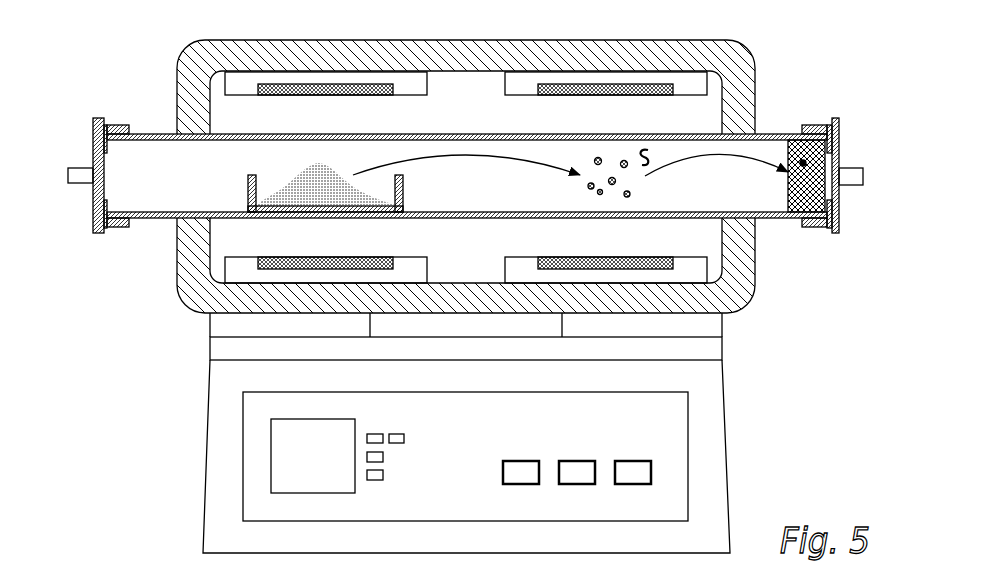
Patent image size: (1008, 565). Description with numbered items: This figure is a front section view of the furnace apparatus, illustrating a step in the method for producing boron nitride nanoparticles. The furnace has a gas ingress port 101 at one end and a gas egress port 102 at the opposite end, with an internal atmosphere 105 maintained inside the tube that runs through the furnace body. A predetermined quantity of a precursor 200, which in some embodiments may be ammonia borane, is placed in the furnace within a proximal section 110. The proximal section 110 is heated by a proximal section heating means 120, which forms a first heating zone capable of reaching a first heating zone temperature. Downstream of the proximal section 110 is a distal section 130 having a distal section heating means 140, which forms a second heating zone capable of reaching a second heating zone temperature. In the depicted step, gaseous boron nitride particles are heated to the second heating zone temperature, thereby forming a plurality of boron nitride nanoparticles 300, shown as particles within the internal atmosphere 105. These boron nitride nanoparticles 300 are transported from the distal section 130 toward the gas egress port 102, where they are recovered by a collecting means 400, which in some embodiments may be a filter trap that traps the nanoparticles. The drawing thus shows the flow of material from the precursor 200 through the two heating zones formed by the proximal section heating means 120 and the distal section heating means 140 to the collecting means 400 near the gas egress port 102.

The gas ingress port 101 is at (60, 183).
The gas egress port 102 is at (875, 183).
The internal atmosphere 105 is at (645, 160).
The proximal section 110 is at (155, 233).
The proximal section heating means 120 is at (306, 272).
The distal section 130 is at (775, 230).
The distal section heating means 140 is at (627, 273).
The precursor 200 is at (275, 173).
The boron nitride nanoparticles 300 is at (590, 158).
The collecting means 400 is at (803, 163).